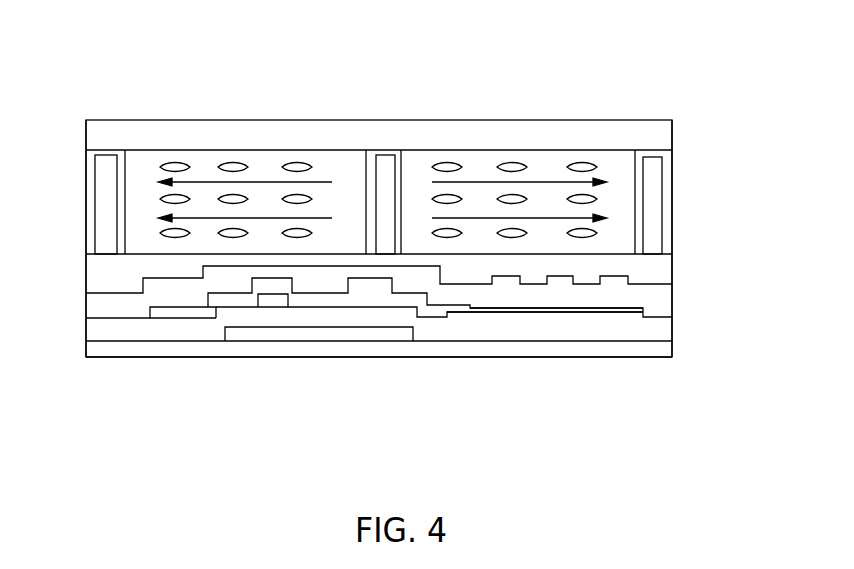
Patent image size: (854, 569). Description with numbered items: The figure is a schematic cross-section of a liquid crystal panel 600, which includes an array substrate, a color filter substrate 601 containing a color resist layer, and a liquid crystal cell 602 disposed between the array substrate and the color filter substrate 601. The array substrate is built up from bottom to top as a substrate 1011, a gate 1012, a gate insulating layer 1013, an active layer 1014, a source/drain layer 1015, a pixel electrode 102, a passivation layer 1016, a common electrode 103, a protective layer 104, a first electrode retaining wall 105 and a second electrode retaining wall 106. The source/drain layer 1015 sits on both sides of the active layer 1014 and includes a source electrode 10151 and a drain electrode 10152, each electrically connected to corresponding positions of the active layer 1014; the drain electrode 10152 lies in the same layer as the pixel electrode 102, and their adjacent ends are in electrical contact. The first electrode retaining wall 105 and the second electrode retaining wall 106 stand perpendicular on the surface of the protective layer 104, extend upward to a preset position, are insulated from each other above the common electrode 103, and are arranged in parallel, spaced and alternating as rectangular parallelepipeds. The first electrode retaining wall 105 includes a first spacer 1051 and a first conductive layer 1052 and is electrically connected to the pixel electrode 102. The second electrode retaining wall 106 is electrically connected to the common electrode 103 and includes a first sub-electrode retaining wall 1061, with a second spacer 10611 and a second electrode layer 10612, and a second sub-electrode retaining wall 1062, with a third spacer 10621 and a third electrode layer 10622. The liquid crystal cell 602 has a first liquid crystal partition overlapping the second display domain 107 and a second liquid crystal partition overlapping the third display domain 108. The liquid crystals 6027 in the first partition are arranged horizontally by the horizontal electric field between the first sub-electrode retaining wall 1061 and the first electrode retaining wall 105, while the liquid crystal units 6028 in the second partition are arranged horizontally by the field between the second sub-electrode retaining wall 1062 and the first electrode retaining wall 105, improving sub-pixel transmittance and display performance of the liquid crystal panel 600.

The liquid crystal panel 600 is at (138, 34).
The color filter substrate 601 is at (572, 135).
The liquid crystal cell 602 is at (618, 197).
The liquid crystals 6027 is at (293, 163).
The liquid crystal units 6028 is at (493, 165).
The second display domain 107 is at (215, 172).
The third display domain 108 is at (541, 165).
The first electrode retaining wall 105 is at (382, 275).
The first spacer 1051 is at (388, 165).
The first conductive layer 1052 is at (367, 168).
The second electrode retaining wall 106 is at (628, 428).
The first sub-electrode retaining wall 1061 is at (179, 281).
The second spacer 10611 is at (107, 165).
The second electrode layer 10612 is at (86, 165).
The second sub-electrode retaining wall 1062 is at (597, 276).
The third spacer 10621 is at (637, 167).
The third electrode layer 10622 is at (652, 173).
The protective layer 104 is at (640, 270).
The common electrode 103 is at (613, 282).
The passivation layer 1016 is at (120, 309).
The source/drain layer 1015 is at (359, 396).
The source electrode 10151 is at (187, 317).
The drain electrode 10152 is at (438, 308).
The active layer 1014 is at (338, 302).
The gate 1012 is at (270, 335).
The gate insulating layer 1013 is at (510, 327).
The pixel electrode 102 is at (582, 312).
The substrate 1011 is at (647, 347).